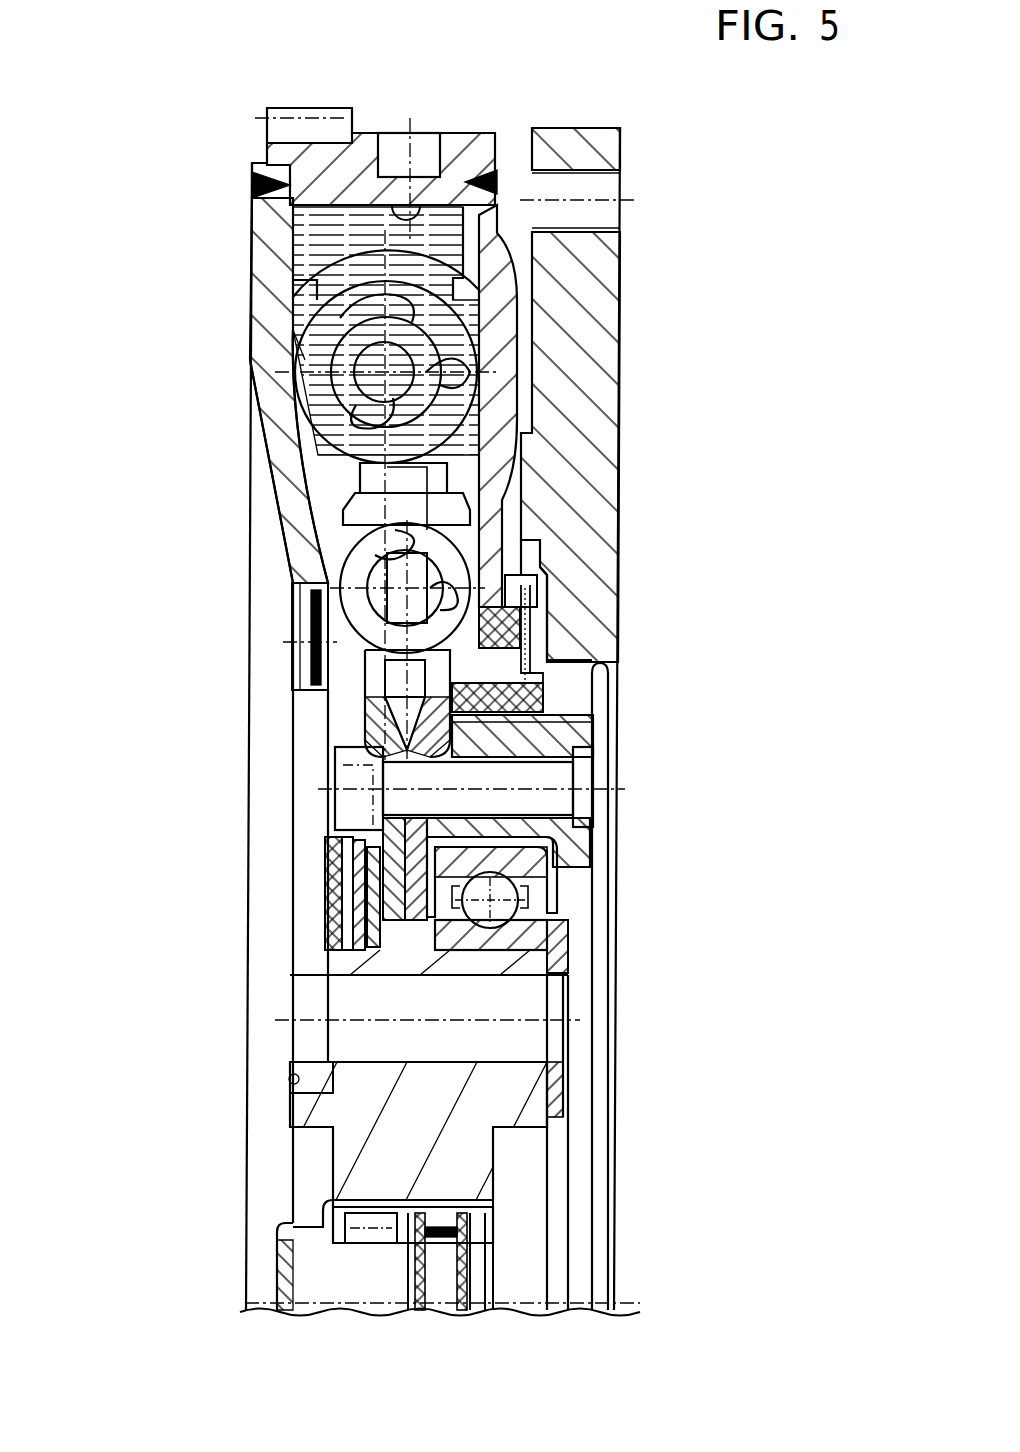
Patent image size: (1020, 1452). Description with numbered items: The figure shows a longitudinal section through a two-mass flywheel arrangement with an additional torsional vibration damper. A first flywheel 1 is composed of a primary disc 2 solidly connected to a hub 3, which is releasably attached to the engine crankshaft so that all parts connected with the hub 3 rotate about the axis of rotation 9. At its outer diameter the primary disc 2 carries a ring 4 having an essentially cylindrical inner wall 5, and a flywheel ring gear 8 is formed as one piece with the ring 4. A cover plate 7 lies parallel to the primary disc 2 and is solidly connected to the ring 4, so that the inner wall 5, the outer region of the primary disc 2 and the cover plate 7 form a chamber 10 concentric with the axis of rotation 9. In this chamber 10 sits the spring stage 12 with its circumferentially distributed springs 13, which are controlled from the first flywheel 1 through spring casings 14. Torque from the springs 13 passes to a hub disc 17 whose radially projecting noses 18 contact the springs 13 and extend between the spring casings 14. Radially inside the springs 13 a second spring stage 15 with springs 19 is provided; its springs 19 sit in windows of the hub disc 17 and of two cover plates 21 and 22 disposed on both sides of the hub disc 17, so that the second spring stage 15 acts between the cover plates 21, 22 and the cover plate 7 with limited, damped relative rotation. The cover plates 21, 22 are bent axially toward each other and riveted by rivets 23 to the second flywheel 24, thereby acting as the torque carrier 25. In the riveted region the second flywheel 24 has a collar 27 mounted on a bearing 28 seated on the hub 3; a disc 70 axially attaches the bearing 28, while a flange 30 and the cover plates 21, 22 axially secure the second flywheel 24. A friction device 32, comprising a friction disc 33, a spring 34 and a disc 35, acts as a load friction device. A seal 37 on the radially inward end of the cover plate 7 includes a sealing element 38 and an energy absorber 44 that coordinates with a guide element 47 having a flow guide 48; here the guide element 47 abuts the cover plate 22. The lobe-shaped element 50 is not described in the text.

The first flywheel 1 is at (238, 283).
The primary disc 2 is at (272, 407).
The hub 3 is at (355, 1140).
The ring 4 is at (330, 162).
The inner wall 5 is at (418, 205).
The cover plate 7 is at (515, 325).
The flywheel ring gear 8 is at (290, 128).
The axis of rotation 9 is at (245, 1300).
The chamber 10 is at (332, 497).
The spring stage 12 is at (280, 350).
The springs 13 is at (318, 372).
The spring casing 14 is at (345, 268).
The second spring stage 15 is at (358, 563).
The hub disc 17 is at (368, 715).
The noses 18 is at (287, 215).
The springs 19 is at (372, 652).
The cover plate 21 is at (378, 732).
The cover plate 22 is at (512, 722).
The rivets 23 is at (555, 778).
The second flywheel 24 is at (598, 412).
The torque carrier 25 is at (470, 664).
The collar 27 is at (512, 752).
The bearing 28 is at (525, 945).
The flange 30 is at (583, 850).
The friction device 32 is at (350, 912).
The friction disc 33 is at (340, 892).
The spring 34 is at (338, 942).
The disc 35 is at (342, 1000).
The seal 37 is at (562, 570).
The sealing element 38 is at (540, 605).
The energy absorber 44 is at (530, 632).
The guide element 47 is at (520, 692).
The flow guide 48 is at (548, 660).
The lobe 50 is at (385, 690).
The disc 70 is at (560, 942).